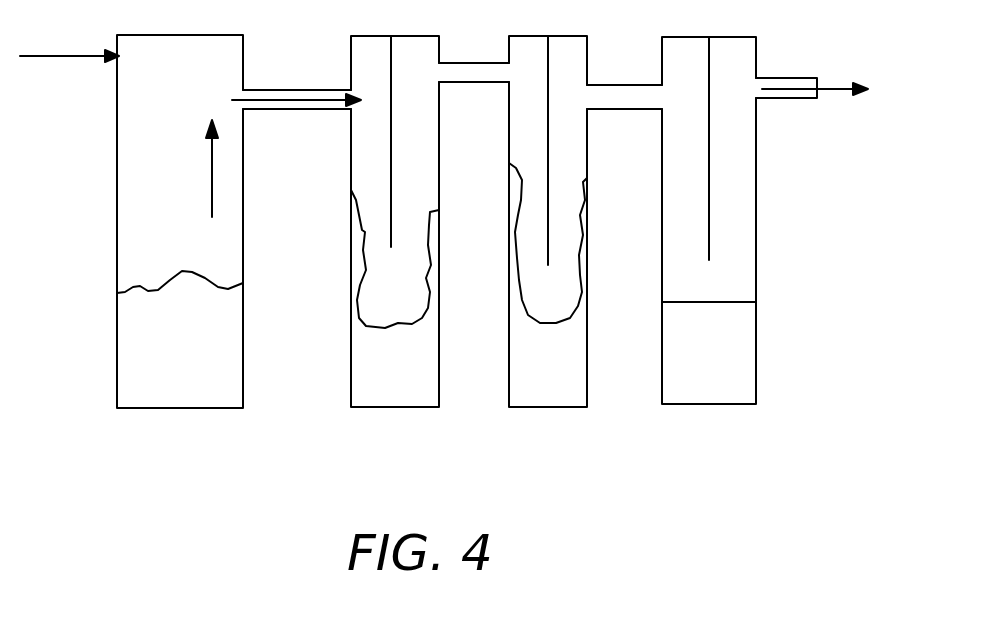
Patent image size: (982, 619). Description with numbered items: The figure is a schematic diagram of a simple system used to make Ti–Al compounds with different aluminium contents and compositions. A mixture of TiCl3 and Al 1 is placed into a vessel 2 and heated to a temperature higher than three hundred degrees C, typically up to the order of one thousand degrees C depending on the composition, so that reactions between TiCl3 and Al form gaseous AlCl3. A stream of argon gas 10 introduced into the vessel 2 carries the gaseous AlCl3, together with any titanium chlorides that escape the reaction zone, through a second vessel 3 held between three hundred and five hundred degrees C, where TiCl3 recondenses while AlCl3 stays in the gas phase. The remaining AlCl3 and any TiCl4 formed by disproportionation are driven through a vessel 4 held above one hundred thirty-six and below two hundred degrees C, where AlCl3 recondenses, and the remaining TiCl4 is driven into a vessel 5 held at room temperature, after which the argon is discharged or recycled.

The stream of argon gas 10 is at (58, 65).
The mixture of TiCl3 and Al 1 is at (180, 328).
The vessel 2 is at (190, 396).
The second vessel 3 is at (398, 397).
The vessel 4 is at (552, 388).
The vessel 5 is at (765, 243).